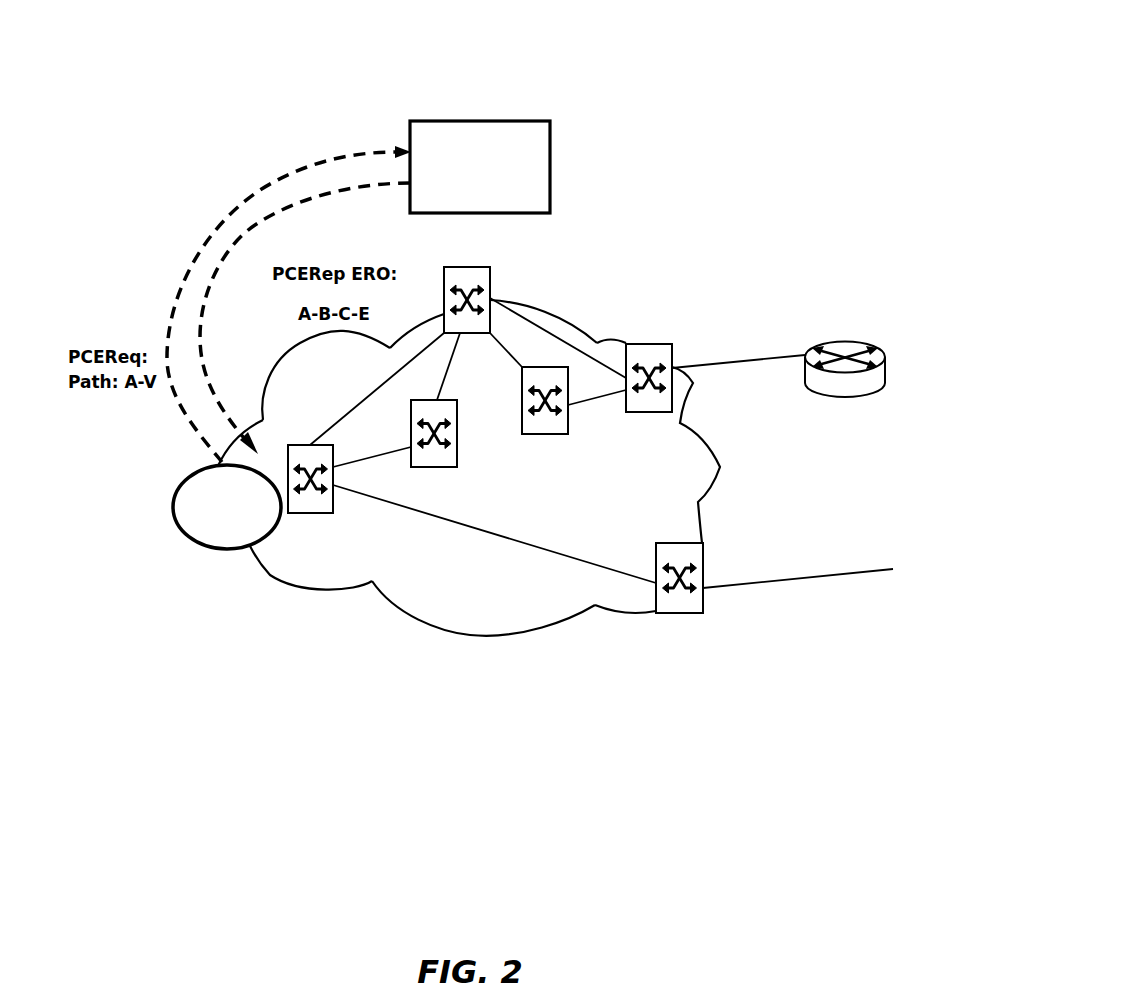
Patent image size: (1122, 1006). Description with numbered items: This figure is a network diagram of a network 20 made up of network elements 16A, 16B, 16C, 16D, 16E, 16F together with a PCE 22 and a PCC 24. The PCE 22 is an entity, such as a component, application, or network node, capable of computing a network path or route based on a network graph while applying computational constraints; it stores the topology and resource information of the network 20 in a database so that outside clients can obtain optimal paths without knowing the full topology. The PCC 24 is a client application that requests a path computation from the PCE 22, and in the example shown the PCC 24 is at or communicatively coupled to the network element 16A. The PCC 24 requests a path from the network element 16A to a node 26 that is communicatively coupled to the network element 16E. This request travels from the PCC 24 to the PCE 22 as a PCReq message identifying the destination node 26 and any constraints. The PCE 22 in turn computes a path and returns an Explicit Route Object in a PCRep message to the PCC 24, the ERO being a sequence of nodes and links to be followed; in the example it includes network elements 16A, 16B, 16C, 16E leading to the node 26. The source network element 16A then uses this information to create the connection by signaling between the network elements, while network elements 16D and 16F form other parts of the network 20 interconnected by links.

The network 20 is at (719, 59).
The PCE 22 is at (493, 121).
The PCC 24 is at (210, 548).
The node 26 is at (842, 341).
The network element 16A is at (313, 513).
The network element 16B is at (425, 467).
The network element 16C is at (490, 282).
The network element 16D is at (540, 434).
The network element 16E is at (660, 344).
The network element 16F is at (703, 563).